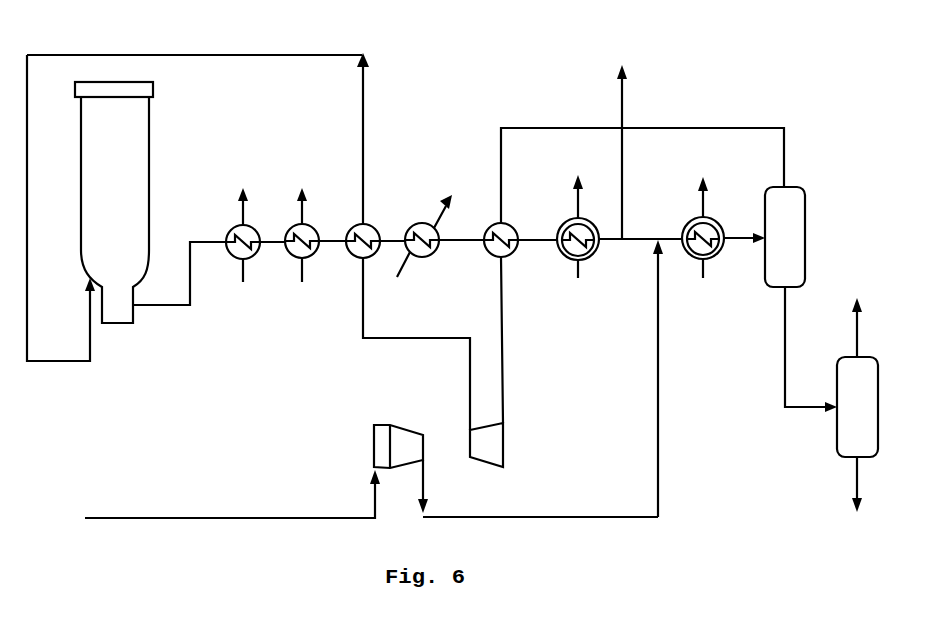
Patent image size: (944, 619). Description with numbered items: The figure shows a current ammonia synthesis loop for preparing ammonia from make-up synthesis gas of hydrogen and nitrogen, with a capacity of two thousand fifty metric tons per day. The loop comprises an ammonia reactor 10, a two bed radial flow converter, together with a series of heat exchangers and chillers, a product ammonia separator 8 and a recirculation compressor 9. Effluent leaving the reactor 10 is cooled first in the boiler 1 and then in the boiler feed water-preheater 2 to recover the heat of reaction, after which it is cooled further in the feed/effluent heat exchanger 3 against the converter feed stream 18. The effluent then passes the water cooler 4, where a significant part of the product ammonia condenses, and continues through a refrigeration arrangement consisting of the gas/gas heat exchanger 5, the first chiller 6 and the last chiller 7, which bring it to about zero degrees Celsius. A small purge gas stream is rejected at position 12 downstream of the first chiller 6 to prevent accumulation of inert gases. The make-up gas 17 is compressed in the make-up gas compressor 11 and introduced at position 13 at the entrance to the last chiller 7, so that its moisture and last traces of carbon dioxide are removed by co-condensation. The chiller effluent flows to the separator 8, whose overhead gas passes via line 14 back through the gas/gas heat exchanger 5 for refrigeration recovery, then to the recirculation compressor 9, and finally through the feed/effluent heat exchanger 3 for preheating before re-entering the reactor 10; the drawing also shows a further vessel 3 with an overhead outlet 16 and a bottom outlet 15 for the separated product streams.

The boiler 1 is at (239, 235).
The boiler feed water-preheater 2 is at (298, 235).
The feed/effluent heat exchanger 3 is at (610, 332).
The water cooler 4 is at (424, 236).
The gas/gas heat exchanger 5 is at (633, 275).
The first chiller 6 is at (578, 226).
The last chiller 7 is at (703, 227).
The product ammonia separator 8 is at (785, 237).
The recirculation compressor 9 is at (486, 445).
The ammonia reactor 10 is at (90, 208).
The make-up gas compressor 11 is at (516, 471).
The purge gas position 12 is at (621, 163).
The make-up gas introduction position 13 is at (657, 366).
The transfer line 14 is at (797, 349).
The bottom outlet line 15 is at (868, 484).
The top outlet line 16 is at (868, 327).
The make-up gas 17 is at (231, 494).
The converter feed stream 18 is at (208, 138).